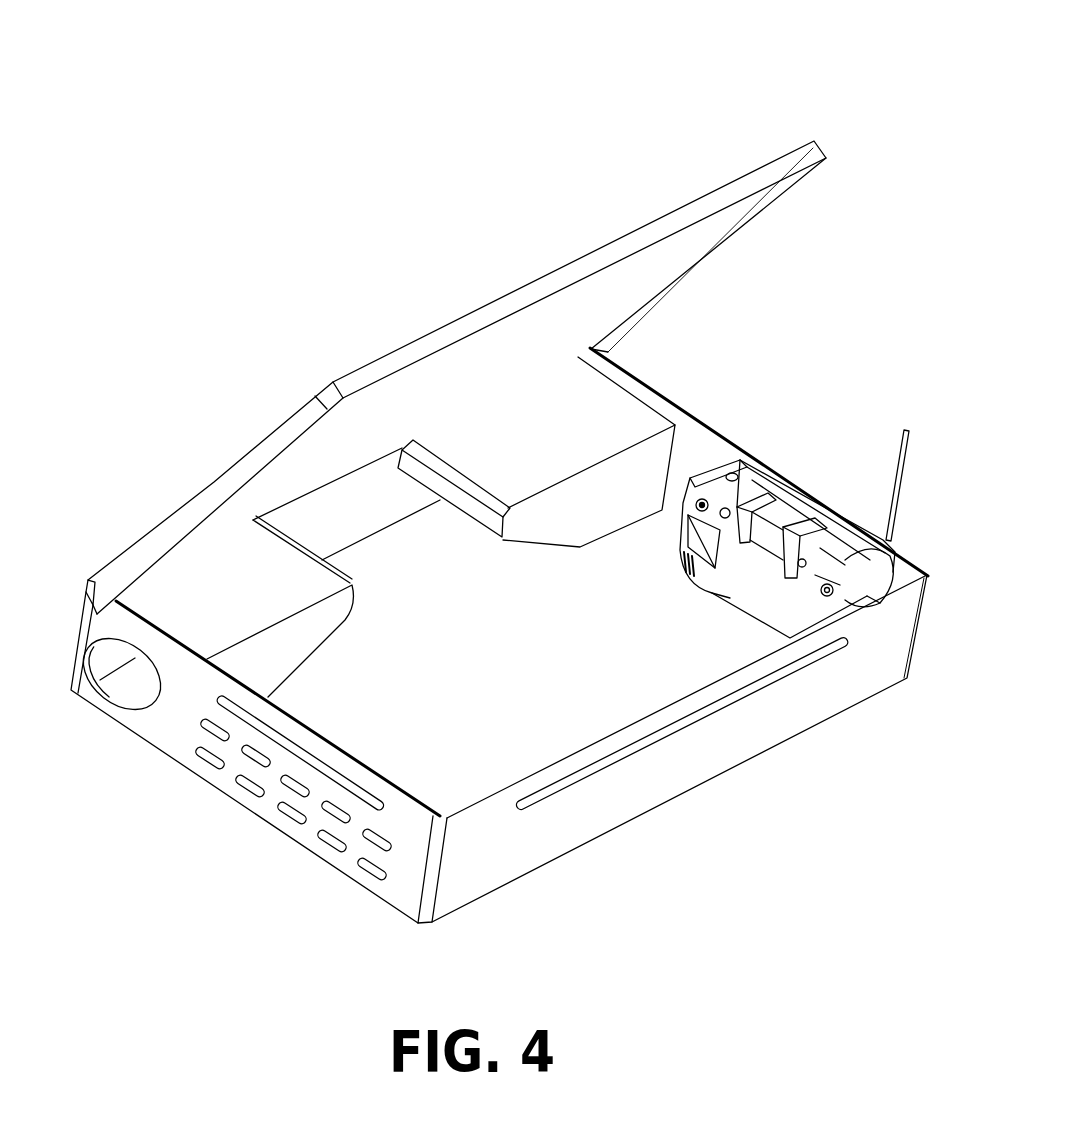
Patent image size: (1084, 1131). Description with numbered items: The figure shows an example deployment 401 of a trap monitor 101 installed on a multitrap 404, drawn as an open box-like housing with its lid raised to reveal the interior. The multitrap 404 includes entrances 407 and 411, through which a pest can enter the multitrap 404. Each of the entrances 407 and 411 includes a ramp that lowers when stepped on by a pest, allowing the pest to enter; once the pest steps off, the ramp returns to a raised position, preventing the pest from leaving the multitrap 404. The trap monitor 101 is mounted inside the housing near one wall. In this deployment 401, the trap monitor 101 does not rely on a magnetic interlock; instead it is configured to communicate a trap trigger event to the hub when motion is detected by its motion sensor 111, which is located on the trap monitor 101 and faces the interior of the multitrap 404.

The deployment 401 is at (842, 82).
The multitrap 404 is at (547, 830).
The entrance 407 is at (322, 628).
The entrance 411 is at (548, 528).
The motion sensor 111 is at (677, 547).
The trap monitor 101 is at (760, 472).